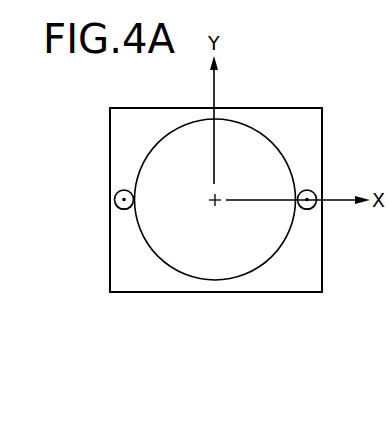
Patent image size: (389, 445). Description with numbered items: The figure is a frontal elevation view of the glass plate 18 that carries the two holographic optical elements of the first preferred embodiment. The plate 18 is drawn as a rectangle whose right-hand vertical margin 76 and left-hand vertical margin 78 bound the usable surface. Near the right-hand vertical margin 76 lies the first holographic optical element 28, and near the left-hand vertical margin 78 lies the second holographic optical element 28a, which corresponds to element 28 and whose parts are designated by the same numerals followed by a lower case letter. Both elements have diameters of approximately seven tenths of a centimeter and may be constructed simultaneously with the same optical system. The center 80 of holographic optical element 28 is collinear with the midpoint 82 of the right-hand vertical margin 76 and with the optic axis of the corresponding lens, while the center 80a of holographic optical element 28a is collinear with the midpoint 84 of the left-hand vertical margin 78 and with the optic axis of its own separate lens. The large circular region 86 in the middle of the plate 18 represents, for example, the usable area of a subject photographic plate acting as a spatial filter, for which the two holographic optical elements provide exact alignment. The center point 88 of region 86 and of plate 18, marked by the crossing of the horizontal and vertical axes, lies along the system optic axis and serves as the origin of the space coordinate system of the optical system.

The plate 18 is at (280, 110).
The right-hand vertical margin 76 is at (322, 139).
The left-hand vertical margin 78 is at (110, 136).
The circular region 86 is at (172, 259).
The center point 88 is at (211, 196).
The second holographic optical element 28a is at (112, 186).
The first holographic optical element 28 is at (313, 186).
The midpoint of left-hand vertical margin 84 is at (114, 200).
The midpoint of right-hand vertical margin 82 is at (321, 198).
The center of holographic optical element 28a 80a is at (121, 208).
The center of holographic optical element 28 80 is at (311, 208).